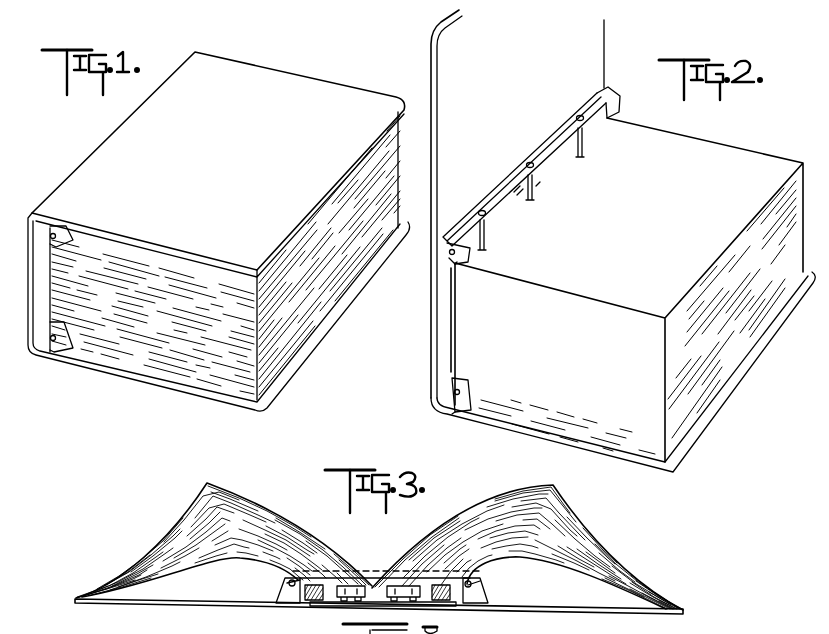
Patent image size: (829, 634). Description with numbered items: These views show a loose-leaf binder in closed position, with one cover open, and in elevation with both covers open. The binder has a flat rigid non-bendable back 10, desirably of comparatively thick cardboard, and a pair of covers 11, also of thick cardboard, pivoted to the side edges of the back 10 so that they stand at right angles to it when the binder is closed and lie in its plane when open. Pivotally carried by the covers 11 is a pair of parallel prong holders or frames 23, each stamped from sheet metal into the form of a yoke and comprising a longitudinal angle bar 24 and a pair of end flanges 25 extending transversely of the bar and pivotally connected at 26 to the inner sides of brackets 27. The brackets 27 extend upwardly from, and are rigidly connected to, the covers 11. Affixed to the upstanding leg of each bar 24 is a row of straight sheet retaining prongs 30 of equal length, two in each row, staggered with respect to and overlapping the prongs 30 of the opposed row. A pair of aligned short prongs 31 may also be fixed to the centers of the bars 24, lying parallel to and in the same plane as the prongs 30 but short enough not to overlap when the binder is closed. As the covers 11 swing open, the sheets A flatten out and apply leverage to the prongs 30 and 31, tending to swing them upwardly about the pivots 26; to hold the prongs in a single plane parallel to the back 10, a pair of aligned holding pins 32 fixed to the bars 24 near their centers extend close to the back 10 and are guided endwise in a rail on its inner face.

In FIG. 1, the back 10 is at (32, 345).
In FIG. 2, the back 10 is at (442, 352).
In FIG. 3, the covers 11 is at (213, 607).
In FIG. 2, the prong holders or frames 23 is at (610, 91).
In FIG. 2, the longitudinal angle bar 24 is at (553, 143).
In FIG. 1, the end flanges 25 is at (82, 228).
In FIG. 2, the end flanges 25 is at (468, 251).
In FIG. 3, the end flanges 25 is at (287, 580).
In FIG. 2, the pivotal connection 26 is at (450, 266).
In FIG. 3, the pivotal connection 26 is at (287, 584).
In FIG. 1, the brackets 27 is at (53, 230).
In FIG. 2, the brackets 27 is at (447, 251).
In FIG. 3, the brackets 27 is at (290, 596).
In FIG. 2, the sheet retaining prongs 30 is at (586, 150).
In FIG. 3, the sheet retaining prongs 30 is at (371, 570).
In FIG. 2, the short prongs 31 is at (535, 195).
In FIG. 2, the holding pins 32 is at (518, 199).
In FIG. 3, the sheets A is at (630, 563).